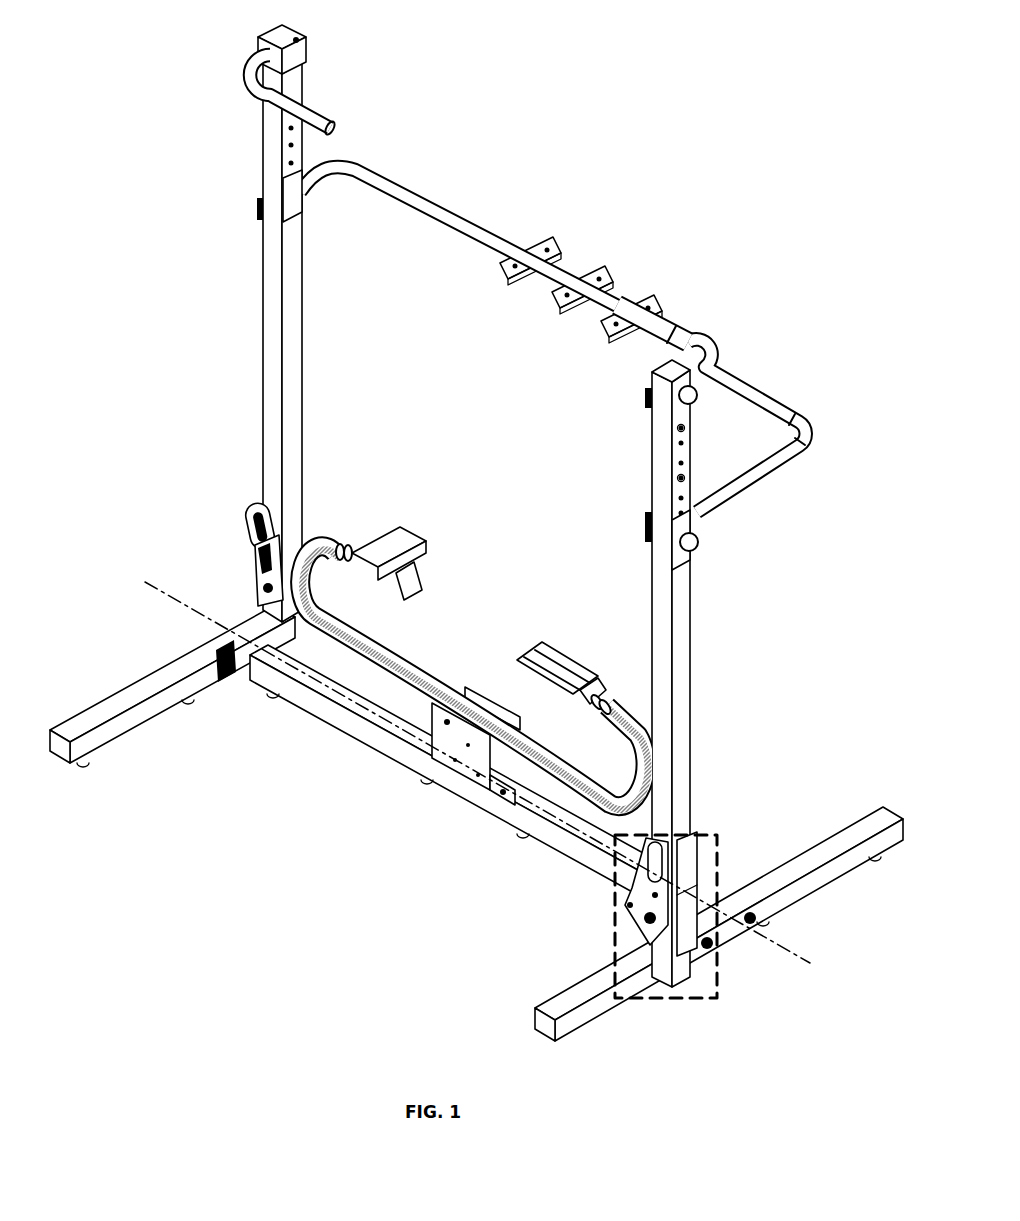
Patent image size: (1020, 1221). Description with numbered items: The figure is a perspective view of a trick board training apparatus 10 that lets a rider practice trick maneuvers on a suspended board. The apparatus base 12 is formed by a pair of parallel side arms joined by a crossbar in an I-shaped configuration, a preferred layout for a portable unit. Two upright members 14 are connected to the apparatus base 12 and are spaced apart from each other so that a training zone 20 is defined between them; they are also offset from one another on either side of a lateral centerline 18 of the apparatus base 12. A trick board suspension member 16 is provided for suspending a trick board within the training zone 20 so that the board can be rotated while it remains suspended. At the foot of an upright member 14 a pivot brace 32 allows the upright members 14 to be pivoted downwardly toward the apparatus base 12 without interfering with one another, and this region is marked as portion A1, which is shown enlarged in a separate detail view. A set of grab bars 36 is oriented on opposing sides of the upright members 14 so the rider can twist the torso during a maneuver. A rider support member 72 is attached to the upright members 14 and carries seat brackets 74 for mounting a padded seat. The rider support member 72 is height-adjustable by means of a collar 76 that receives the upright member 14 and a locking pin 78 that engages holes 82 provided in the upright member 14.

The trick board training apparatus 10 is at (722, 138).
The apparatus base 12 is at (126, 734).
The upright members 14 is at (262, 297).
The trick board suspension member 16 is at (447, 710).
The lateral centerline 18 is at (145, 583).
The training zone 20 is at (533, 436).
The pivot brace 32 is at (256, 548).
The grab bars 36 is at (312, 113).
The rider support member 72 is at (800, 400).
The seat brackets 74 is at (647, 298).
The collar 76 is at (293, 218).
The locking pin 78 is at (700, 548).
The holes 82 is at (680, 430).
The portion A1 is at (708, 1020).